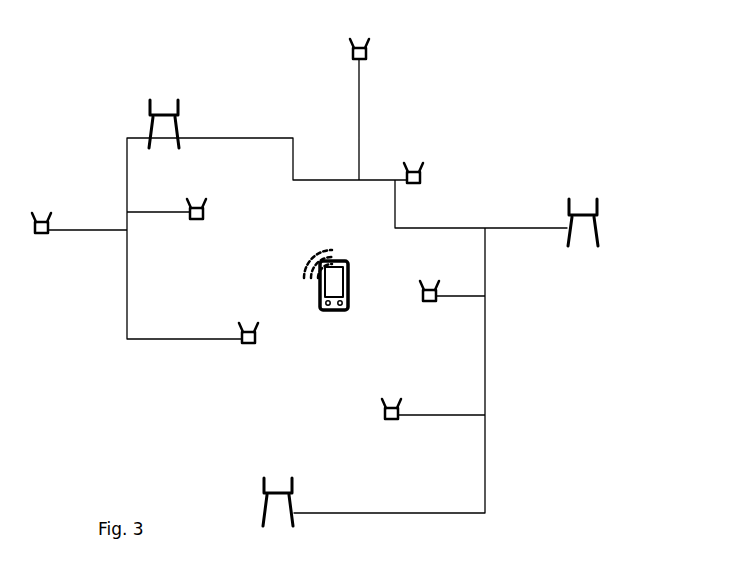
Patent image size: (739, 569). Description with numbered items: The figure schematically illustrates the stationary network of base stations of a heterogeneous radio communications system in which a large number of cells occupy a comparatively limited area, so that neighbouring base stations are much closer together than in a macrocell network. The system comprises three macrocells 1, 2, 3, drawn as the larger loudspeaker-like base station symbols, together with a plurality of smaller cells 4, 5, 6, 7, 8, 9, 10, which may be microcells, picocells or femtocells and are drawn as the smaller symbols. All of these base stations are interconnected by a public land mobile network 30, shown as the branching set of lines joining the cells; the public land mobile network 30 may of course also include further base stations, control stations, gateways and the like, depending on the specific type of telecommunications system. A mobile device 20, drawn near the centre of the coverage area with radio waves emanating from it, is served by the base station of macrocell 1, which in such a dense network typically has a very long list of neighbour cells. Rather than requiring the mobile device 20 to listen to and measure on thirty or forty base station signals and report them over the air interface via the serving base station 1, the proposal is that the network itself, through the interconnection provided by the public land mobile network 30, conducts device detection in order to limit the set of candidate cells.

The macrocell 1 is at (187, 118).
The macrocell 2 is at (605, 213).
The macrocell 3 is at (302, 493).
The smaller cell 4 is at (378, 57).
The smaller cell 5 is at (428, 181).
The smaller cell 6 is at (445, 290).
The smaller cell 7 is at (407, 407).
The smaller cell 8 is at (235, 332).
The smaller cell 9 is at (177, 208).
The smaller cell 10 is at (63, 222).
The mobile device 20 is at (353, 295).
The public land mobile network 30 is at (492, 485).